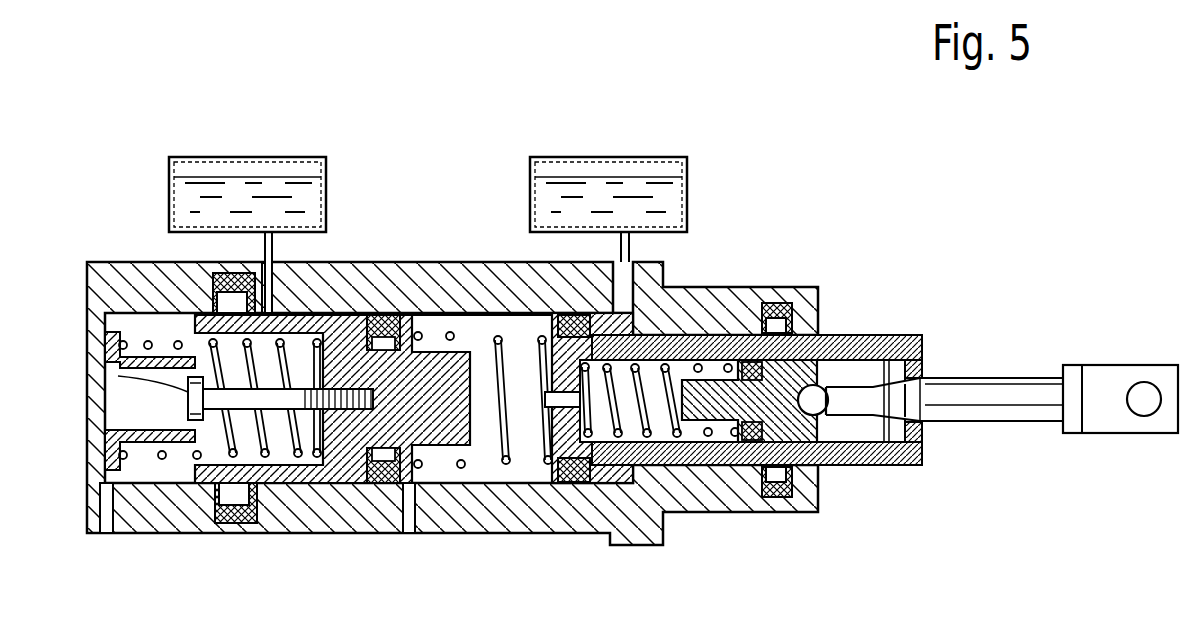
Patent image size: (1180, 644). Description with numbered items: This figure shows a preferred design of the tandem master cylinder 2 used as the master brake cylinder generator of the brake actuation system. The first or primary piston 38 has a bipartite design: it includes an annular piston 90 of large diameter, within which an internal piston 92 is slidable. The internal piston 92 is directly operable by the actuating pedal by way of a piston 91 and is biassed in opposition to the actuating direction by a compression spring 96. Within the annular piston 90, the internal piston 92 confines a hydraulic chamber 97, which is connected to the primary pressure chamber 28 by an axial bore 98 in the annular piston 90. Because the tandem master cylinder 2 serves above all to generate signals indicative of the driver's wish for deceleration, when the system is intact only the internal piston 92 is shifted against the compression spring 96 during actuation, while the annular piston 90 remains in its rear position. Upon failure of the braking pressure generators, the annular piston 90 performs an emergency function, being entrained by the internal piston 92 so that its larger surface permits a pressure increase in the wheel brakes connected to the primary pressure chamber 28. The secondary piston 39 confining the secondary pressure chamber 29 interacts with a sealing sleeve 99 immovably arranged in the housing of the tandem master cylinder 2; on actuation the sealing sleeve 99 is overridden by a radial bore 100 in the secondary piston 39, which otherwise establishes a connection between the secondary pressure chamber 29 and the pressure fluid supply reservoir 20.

The tandem master cylinder 2 is at (127, 258).
The pressure fluid supply reservoir 20 is at (282, 165).
The primary pressure chamber 28 is at (487, 448).
The secondary pressure chamber 29 is at (148, 463).
The primary piston 38 is at (540, 370).
The secondary piston 39 is at (345, 315).
The annular piston 90 is at (607, 465).
The piston 91 is at (1014, 407).
The internal piston 92 is at (805, 505).
The compression spring 96 is at (688, 440).
The hydraulic chamber 97 is at (655, 373).
The axial bore 98 is at (558, 400).
The sealing sleeve 99 is at (249, 490).
The radial bore 100 is at (188, 382).